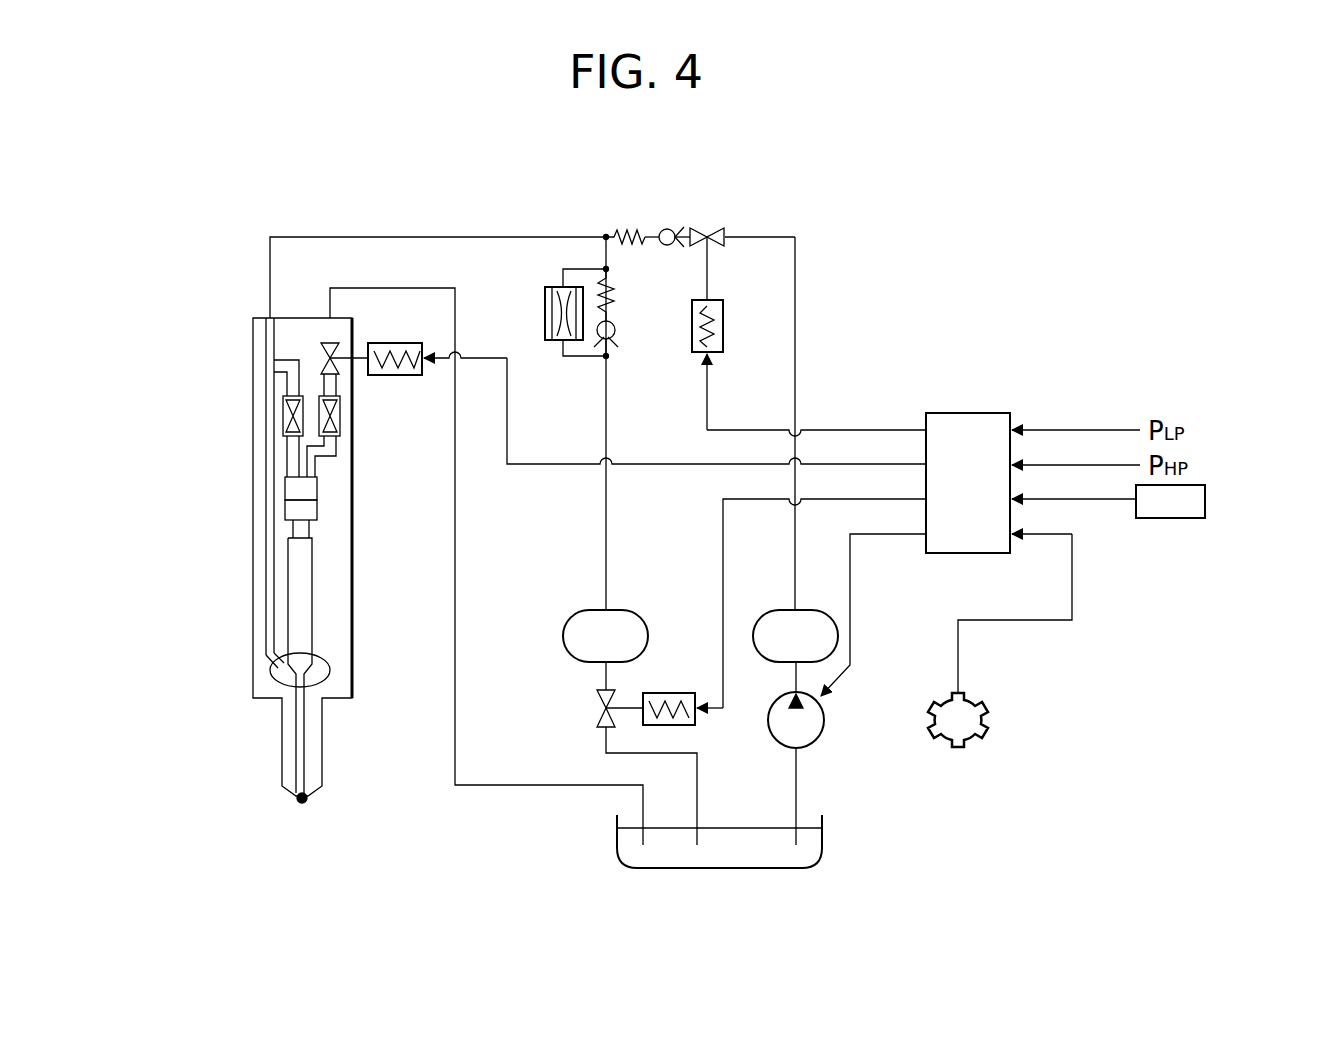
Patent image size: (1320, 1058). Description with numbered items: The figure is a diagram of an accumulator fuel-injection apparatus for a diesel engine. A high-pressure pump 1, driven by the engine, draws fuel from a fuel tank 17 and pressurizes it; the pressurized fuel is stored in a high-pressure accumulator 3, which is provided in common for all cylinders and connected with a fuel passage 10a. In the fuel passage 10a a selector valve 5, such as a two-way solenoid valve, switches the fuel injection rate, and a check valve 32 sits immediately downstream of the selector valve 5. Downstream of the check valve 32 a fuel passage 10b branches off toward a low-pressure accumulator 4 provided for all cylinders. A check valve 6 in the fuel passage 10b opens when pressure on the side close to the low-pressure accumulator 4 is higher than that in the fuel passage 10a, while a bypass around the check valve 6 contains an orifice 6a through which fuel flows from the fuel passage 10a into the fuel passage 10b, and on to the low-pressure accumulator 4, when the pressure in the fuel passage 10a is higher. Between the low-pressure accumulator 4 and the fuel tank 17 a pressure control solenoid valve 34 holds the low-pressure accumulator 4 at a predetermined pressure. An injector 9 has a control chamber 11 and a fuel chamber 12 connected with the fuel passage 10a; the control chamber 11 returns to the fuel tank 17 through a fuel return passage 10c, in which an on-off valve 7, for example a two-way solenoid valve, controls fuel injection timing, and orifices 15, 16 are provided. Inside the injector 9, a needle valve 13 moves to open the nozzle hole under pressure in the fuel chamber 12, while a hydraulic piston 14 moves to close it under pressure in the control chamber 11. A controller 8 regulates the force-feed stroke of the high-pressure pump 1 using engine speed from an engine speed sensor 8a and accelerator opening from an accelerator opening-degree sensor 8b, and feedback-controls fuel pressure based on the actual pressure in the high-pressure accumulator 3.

The high-pressure pump 1 is at (818, 742).
The high-pressure accumulator 3 is at (773, 612).
The low-pressure accumulator 4 is at (585, 612).
The selector valve 5 is at (711, 226).
The check valve 6 is at (619, 293).
The orifice 6a is at (545, 316).
The on-off valve 7 is at (341, 352).
The controller (ECU) 8 is at (965, 413).
The engine speed sensor 8a is at (988, 712).
The accelerator opening-degree sensor 8b is at (1206, 500).
The injector 9 is at (253, 510).
The fuel passage 10a is at (504, 236).
The fuel passage 10b is at (608, 408).
The fuel return passage 10c is at (456, 640).
The control chamber 11 is at (305, 490).
The fuel chamber 12 is at (313, 672).
The needle valve 13 is at (300, 637).
The hydraulic piston 14 is at (312, 510).
The orifice 15 is at (296, 396).
The orifice 16 is at (342, 410).
The fuel tank 17 is at (750, 858).
The check valve 32 is at (617, 229).
The pressure control solenoid valve 34 is at (599, 708).